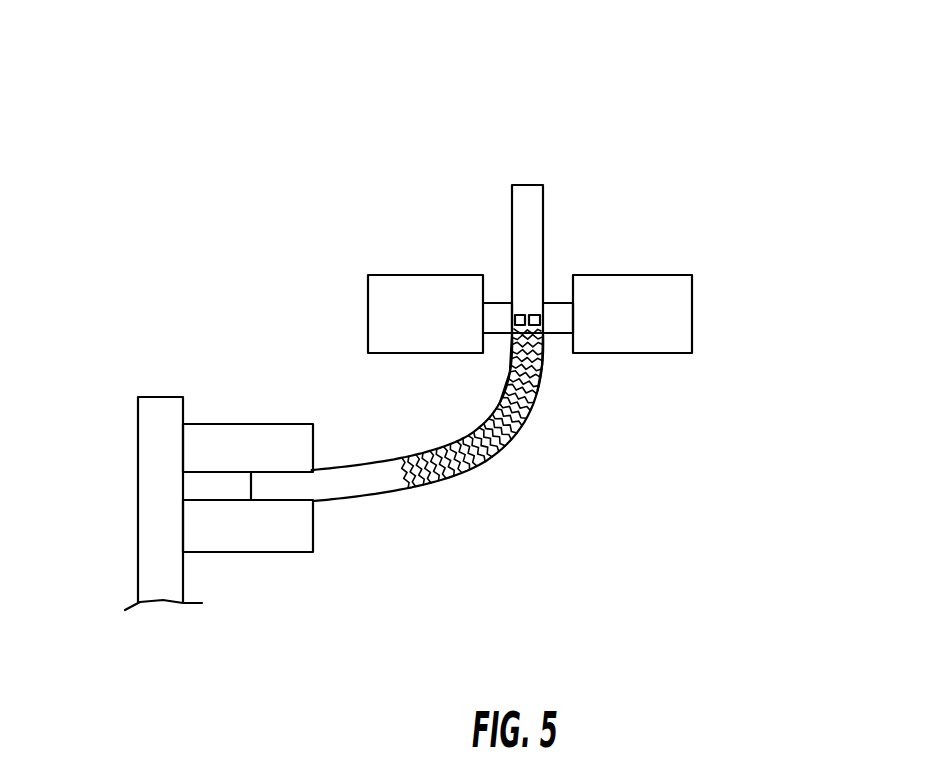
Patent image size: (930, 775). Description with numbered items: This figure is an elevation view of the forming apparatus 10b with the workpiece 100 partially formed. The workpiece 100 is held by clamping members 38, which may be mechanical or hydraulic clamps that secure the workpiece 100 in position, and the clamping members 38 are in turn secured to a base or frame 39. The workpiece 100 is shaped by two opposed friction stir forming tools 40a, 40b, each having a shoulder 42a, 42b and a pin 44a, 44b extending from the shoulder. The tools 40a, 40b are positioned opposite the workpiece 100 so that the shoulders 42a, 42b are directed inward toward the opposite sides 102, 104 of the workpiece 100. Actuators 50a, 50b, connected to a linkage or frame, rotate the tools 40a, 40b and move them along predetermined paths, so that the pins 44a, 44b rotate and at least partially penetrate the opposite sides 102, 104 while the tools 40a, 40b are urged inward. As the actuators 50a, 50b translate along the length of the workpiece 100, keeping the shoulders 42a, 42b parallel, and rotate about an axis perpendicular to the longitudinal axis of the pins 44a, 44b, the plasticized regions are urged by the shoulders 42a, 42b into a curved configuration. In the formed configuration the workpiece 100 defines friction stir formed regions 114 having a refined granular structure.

The forming apparatus 10b is at (790, 112).
The workpiece 100 is at (528, 185).
The first side of the workpiece 102 is at (512, 215).
The second side of the workpiece 104 is at (545, 217).
The first actuator 50a is at (367, 288).
The second actuator 50b is at (678, 355).
The first friction stir forming tool 40a is at (502, 291).
The second friction stir forming tool 40b is at (560, 269).
The first shoulder 42a is at (514, 331).
The second shoulder 42b is at (543, 307).
The first pin 44a is at (512, 338).
The second pin 44b is at (545, 345).
The friction stir formed regions 114 is at (477, 462).
The base or frame 39 is at (138, 468).
The clamping members 38 is at (225, 424).